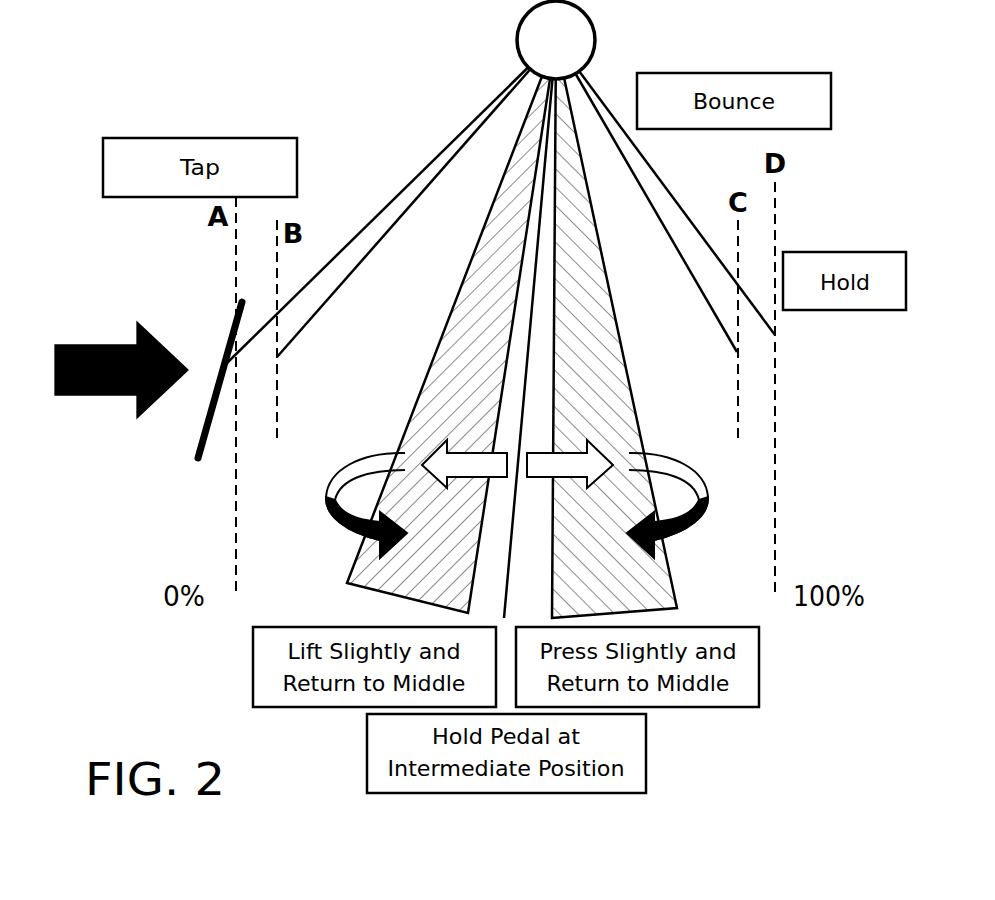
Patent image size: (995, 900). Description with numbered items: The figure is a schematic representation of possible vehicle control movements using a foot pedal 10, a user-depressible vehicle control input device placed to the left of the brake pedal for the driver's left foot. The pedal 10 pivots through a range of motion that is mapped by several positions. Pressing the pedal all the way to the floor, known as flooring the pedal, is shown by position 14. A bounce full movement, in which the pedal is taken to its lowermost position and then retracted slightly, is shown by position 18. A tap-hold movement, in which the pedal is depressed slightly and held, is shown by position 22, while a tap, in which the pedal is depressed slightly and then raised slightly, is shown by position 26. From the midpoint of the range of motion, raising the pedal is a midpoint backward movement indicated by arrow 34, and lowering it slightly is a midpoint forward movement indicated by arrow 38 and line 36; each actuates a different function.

The foot pedal 10 is at (199, 432).
The position 14 is at (775, 472).
The position 18 is at (737, 398).
The position 22 is at (277, 398).
The position 26 is at (236, 532).
The arrow 34 is at (468, 455).
The line 36 is at (532, 302).
The arrow 38 is at (562, 460).